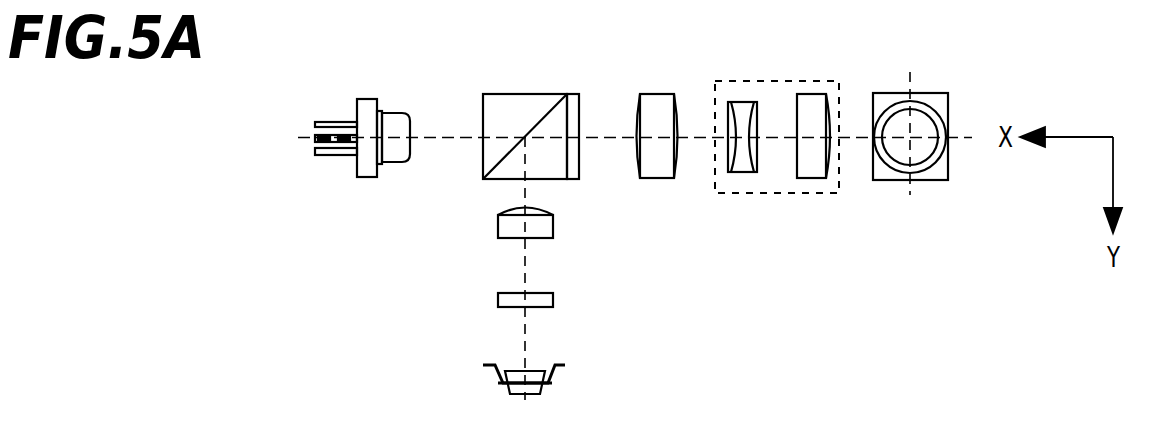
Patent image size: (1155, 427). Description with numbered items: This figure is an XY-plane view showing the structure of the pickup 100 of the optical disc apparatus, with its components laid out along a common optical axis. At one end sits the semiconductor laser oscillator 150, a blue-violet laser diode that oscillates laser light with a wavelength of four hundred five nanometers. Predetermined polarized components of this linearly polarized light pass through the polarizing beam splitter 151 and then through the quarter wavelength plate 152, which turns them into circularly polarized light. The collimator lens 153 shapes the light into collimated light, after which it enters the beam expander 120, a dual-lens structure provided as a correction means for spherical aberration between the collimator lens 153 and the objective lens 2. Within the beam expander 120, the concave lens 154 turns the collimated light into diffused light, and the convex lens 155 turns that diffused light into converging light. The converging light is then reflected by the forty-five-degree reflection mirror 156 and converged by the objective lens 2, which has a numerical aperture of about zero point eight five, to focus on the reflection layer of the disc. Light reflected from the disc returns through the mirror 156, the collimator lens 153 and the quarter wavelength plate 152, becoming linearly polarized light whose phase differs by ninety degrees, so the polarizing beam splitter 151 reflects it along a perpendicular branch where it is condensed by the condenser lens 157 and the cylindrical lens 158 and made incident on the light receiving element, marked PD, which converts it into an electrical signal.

The pickup 100 is at (430, 236).
The semiconductor laser oscillator 150 is at (390, 112).
The polarizing beam splitter 151 is at (517, 94).
The quarter wavelength plate 152 is at (568, 94).
The collimator lens 153 is at (653, 94).
The beam expander 120 is at (772, 195).
The concave lens 154 is at (742, 102).
The convex lens 155 is at (808, 94).
The 45-degree reflection mirror 156 is at (930, 180).
The objective lens 2 is at (928, 93).
The condenser lens 157 is at (553, 226).
The cylindrical lens 158 is at (553, 300).
The photodetector PD is at (560, 380).